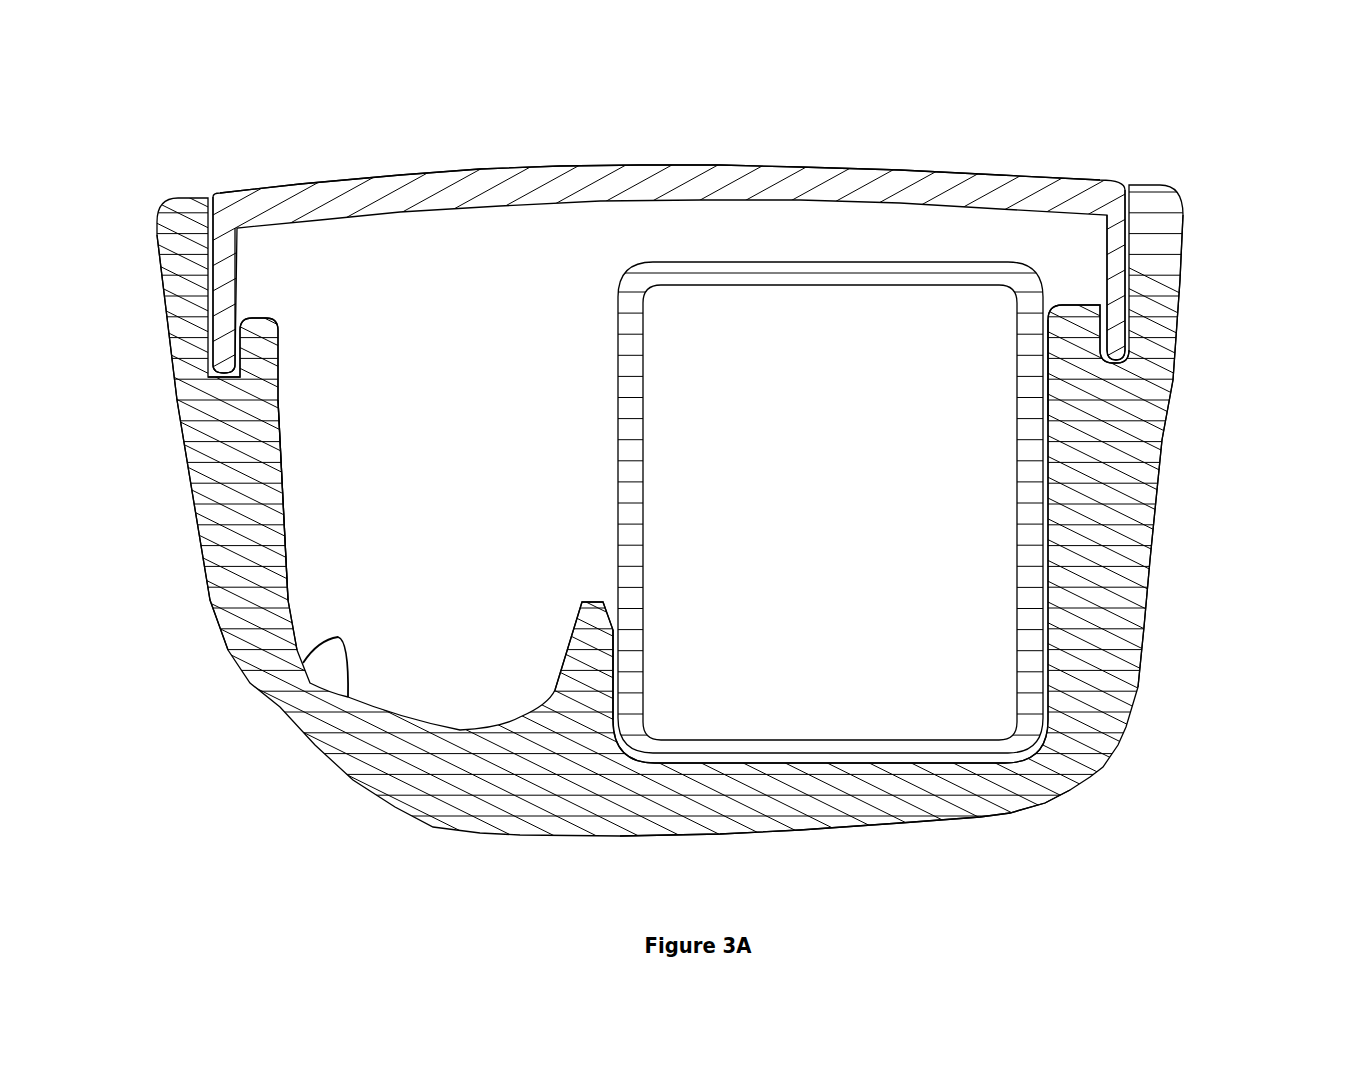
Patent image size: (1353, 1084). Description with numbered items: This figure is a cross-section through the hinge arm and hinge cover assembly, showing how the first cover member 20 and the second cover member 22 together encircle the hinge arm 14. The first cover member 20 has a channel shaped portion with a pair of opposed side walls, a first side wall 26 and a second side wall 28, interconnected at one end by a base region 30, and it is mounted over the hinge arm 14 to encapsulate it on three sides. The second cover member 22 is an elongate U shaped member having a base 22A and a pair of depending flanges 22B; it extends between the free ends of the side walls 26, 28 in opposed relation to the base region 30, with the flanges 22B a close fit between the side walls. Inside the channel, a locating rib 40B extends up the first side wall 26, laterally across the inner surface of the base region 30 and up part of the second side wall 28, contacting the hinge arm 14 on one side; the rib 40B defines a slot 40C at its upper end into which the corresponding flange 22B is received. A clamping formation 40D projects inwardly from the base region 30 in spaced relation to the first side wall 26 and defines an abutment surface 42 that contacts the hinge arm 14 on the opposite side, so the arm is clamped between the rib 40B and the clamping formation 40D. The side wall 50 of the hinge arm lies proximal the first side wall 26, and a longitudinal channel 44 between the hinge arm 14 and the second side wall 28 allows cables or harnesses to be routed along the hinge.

The hinge arm 14 is at (615, 382).
The first cover member 20 is at (493, 807).
The second cover member 22 is at (425, 187).
The base 22A is at (678, 188).
The depending flanges 22B is at (227, 270).
The first side wall 26 is at (1118, 492).
The second side wall 28 is at (225, 553).
The base region 30 is at (908, 805).
The laterally extending locating rib 40B is at (1075, 318).
The slot 40C is at (235, 373).
The clamping formation 40D is at (585, 642).
The abutment surface 42 is at (617, 642).
The longitudinal channel 44 is at (310, 657).
The side wall of the hinge arm 50 is at (1040, 576).